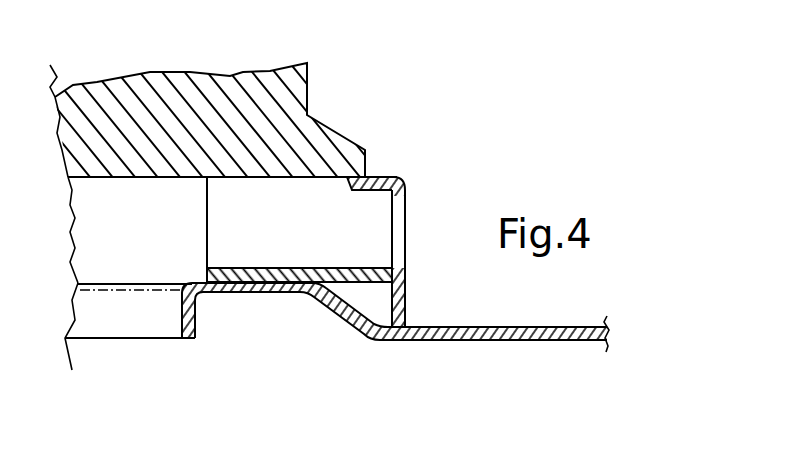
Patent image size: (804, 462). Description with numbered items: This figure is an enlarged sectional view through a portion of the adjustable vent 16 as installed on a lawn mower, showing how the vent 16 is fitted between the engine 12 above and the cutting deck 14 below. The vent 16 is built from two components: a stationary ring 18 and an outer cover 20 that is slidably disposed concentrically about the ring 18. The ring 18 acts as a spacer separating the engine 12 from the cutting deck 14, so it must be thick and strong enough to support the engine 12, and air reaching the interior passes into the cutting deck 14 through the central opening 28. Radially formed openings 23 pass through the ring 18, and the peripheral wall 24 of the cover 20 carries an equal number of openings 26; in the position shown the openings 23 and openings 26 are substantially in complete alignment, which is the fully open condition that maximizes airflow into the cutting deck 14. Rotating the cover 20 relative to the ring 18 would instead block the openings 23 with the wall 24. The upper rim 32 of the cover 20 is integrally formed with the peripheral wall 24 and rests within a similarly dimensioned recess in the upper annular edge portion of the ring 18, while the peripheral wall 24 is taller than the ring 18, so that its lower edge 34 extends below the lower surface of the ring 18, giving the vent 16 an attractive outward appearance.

The engine 12 is at (310, 72).
The cutting deck 14 is at (545, 328).
The adjustable vent 16 is at (390, 230).
The stationary ring 18 is at (298, 268).
The outer cover 20 is at (406, 187).
The openings 23 is at (218, 232).
The peripheral wall 24 is at (405, 287).
The openings 26 is at (397, 230).
The central opening 28 is at (115, 327).
The upper rim 32 is at (348, 189).
The lower edge 34 is at (407, 313).